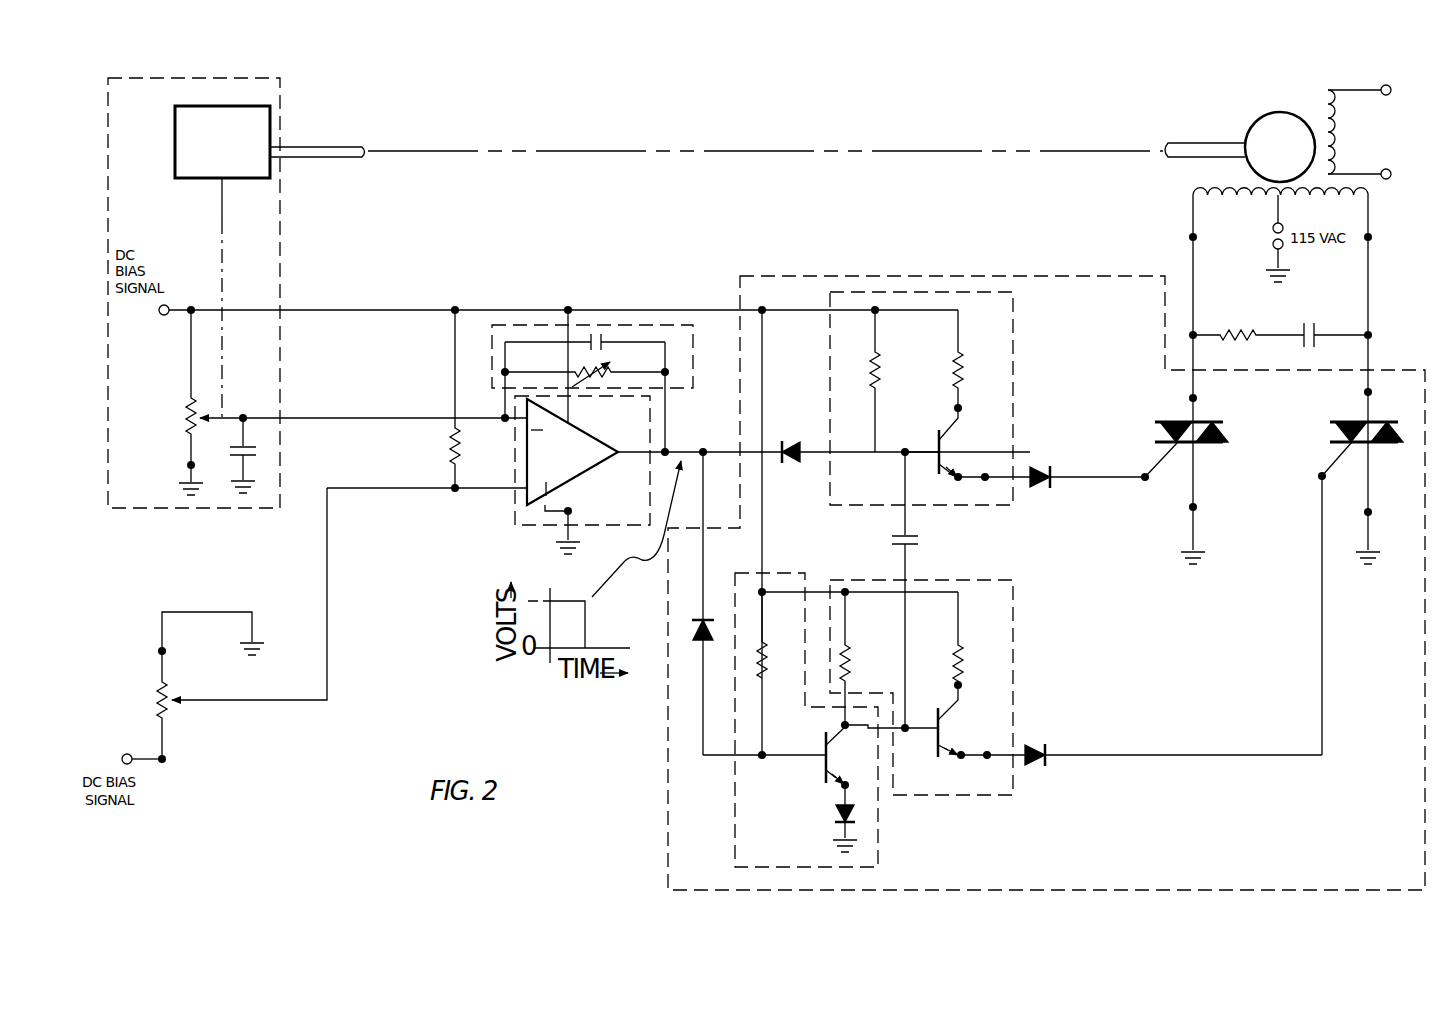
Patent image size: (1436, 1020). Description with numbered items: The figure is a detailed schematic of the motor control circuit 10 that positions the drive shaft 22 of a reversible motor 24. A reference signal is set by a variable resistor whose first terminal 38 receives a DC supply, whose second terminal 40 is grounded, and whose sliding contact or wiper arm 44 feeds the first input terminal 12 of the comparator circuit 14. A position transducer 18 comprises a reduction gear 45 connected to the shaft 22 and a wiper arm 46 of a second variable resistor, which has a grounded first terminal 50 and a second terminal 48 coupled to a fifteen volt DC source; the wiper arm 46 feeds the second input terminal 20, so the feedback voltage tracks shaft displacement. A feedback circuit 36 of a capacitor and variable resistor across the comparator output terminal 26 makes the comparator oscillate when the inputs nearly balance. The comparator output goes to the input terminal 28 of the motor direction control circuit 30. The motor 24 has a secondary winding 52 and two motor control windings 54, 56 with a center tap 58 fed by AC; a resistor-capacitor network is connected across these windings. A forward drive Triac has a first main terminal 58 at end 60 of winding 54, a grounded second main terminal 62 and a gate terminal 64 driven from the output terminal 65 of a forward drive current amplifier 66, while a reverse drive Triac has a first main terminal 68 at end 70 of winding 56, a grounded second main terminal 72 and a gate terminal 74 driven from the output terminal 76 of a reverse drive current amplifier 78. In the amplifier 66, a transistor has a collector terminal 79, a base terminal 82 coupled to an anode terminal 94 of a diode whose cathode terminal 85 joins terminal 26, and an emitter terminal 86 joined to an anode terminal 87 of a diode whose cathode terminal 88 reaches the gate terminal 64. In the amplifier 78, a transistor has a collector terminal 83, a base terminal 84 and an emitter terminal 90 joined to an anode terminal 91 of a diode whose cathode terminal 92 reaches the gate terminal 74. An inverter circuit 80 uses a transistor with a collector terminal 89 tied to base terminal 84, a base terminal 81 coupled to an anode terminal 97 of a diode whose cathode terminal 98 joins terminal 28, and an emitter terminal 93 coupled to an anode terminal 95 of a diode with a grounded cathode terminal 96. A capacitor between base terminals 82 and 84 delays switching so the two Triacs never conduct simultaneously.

The motor control circuit 10 is at (1410, 114).
The first input terminal 12 is at (454, 492).
The comparator circuit 14 is at (514, 503).
The position transducer 18 is at (280, 250).
The second input terminal 20 is at (507, 420).
The drive shaft 22 is at (1176, 142).
The reversible motor 24 is at (1270, 114).
The comparator output terminal 26 is at (667, 449).
The input terminal 28 is at (705, 449).
The motor direction control circuit 30 is at (927, 275).
The feedback circuit 36 is at (642, 323).
The first terminal 38 is at (124, 754).
The second terminal 40 is at (158, 650).
The sliding contact or wiper arm 44 is at (222, 700).
The reduction gear 45 is at (175, 127).
The wiper arm 46 is at (241, 413).
The second terminal 48 is at (162, 316).
The first terminal 50 is at (186, 465).
The secondary winding 52 is at (1338, 134).
The motor control winding 54 is at (1228, 190).
The motor control winding 56 is at (1330, 187).
The center tap 58 is at (1197, 399).
The end of motor control winding 60 is at (1190, 236).
The second main terminal 62 is at (1197, 507).
The gate terminal 64 is at (1144, 480).
The output terminal 65 is at (985, 479).
The forward drive current amplifier 66 is at (1013, 330).
The first main terminal 68 is at (1372, 392).
The end of motor control winding 70 is at (1372, 238).
The second main terminal 72 is at (1372, 510).
The gate terminal 74 is at (1320, 477).
The output terminal 76 is at (987, 759).
The reverse drive current amplifier 78 is at (1013, 672).
The collector terminal 79 is at (962, 407).
The inverter circuit 80 is at (880, 860).
The base terminal 81 is at (776, 760).
The base terminal 82 is at (920, 451).
The collector terminal 83 is at (796, 440).
The base terminal 84 is at (910, 728).
The cathode terminal 85 is at (780, 446).
The emitter terminal 86 is at (958, 474).
The anode terminal 87 is at (1033, 485).
The cathode terminal 88 is at (1052, 472).
The collector terminal 89 is at (837, 734).
The emitter terminal 90 is at (960, 759).
The anode terminal 91 is at (1036, 766).
The cathode terminal 92 is at (1048, 766).
The emitter terminal 93 is at (836, 778).
The anode terminal 94 is at (958, 708).
The anode terminal 95 is at (838, 802).
The cathode terminal 96 is at (858, 822).
The anode terminal 97 is at (704, 640).
The cathode terminal 98 is at (698, 620).